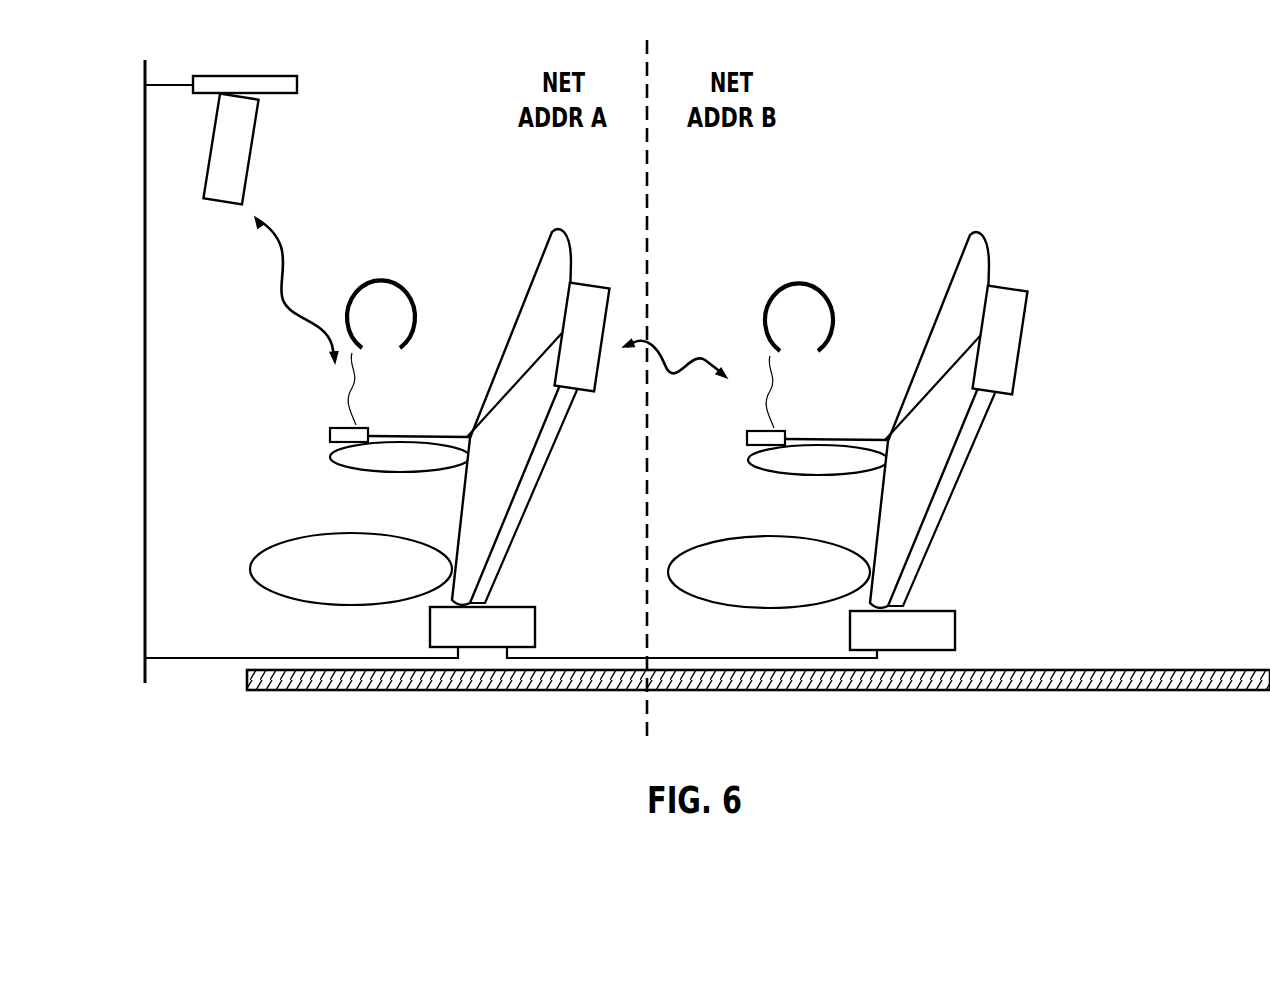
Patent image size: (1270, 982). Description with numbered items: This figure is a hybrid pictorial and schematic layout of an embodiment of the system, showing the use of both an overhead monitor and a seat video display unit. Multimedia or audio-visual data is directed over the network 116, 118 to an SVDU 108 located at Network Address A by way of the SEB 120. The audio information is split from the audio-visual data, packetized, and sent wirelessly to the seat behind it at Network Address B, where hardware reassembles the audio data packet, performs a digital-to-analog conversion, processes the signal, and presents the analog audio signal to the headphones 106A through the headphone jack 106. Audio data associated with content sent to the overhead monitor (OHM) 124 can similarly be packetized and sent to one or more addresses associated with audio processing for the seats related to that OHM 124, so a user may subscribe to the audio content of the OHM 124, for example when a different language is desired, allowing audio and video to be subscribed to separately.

The headphone jack 106 is at (320, 440).
The headphones 106A is at (604, 318).
The seat video display unit (SVDU) 108 is at (802, 321).
The network 116 is at (681, 715).
The network 118 is at (511, 410).
The seat electronics box (SEB) 120 is at (699, 610).
The overhead monitor (OHM) 124 is at (258, 140).